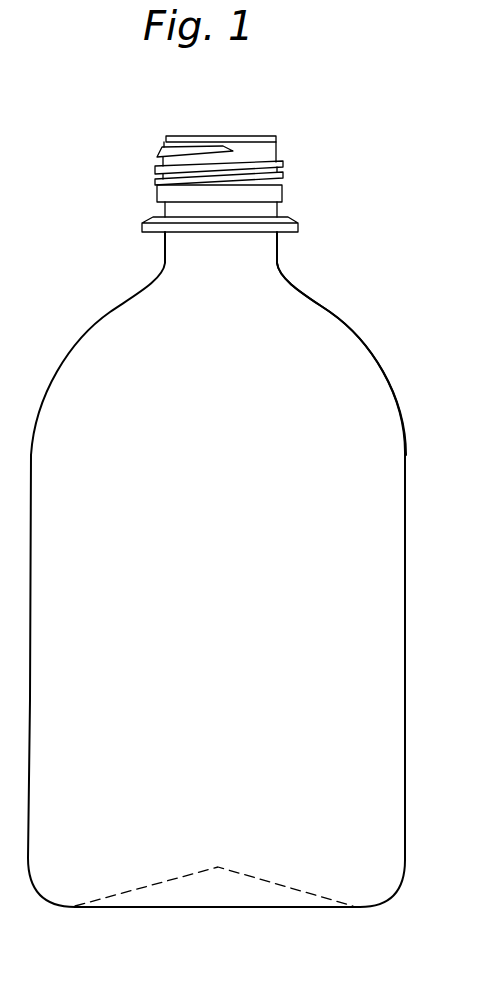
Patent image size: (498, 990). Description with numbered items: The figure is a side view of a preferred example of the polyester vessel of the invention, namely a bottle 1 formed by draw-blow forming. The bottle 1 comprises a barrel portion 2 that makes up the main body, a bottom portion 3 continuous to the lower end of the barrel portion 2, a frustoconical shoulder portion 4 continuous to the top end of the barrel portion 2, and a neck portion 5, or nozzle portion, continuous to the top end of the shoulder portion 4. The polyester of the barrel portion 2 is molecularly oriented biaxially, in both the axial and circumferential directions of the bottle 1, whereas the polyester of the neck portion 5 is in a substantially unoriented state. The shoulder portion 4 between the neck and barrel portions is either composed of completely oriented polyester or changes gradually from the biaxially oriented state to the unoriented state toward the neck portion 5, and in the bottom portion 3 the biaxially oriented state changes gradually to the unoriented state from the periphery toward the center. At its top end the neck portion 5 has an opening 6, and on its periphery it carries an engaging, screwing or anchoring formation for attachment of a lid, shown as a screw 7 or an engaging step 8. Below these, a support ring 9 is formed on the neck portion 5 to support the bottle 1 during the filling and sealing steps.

The bottle 1 is at (318, 557).
The barrel portion 2 is at (405, 663).
The bottom portion 3 is at (283, 908).
The shoulder portion 4 is at (302, 292).
The neck portion 5 is at (227, 162).
The opening 6 is at (243, 137).
The screw 7 is at (160, 167).
The engaging step 8 is at (165, 137).
The support ring 9 is at (140, 225).